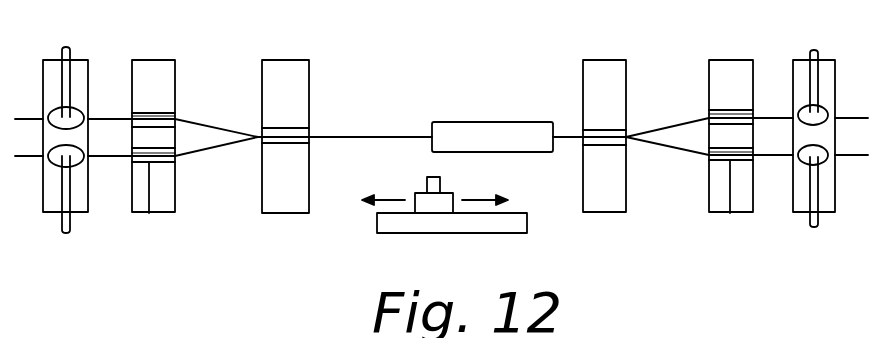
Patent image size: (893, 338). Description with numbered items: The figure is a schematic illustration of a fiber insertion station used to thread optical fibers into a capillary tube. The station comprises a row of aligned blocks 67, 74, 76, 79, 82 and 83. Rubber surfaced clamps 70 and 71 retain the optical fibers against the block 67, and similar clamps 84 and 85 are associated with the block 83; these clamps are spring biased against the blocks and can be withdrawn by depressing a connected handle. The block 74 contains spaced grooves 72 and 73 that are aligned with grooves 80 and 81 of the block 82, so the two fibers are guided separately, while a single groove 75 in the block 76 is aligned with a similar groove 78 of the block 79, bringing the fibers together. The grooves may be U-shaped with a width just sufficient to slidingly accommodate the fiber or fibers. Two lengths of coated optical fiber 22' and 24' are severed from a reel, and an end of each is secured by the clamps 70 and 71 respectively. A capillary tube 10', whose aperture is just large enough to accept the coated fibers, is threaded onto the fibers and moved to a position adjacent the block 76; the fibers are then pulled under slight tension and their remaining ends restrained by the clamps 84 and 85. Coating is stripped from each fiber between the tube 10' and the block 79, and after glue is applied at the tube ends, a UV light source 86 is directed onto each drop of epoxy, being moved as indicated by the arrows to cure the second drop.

The capillary tube 10' is at (492, 113).
The coated optical fiber 22' is at (441, 113).
The coated optical fiber 24' is at (441, 169).
The block 67 is at (803, 58).
The rubber surfaced clamp 70 is at (832, 108).
The rubber surfaced clamp 71 is at (828, 163).
The groove 72 is at (727, 110).
The groove 73 is at (730, 213).
The block 74 is at (730, 60).
The groove 75 is at (605, 130).
The block 76 is at (600, 60).
The groove 78 is at (290, 130).
The block 79 is at (283, 60).
The groove 80 is at (158, 113).
The groove 81 is at (149, 213).
The block 82 is at (152, 60).
The block 83 is at (48, 60).
The clamp 84 is at (70, 113).
The clamp 85 is at (80, 163).
The UV light source 86 is at (428, 185).